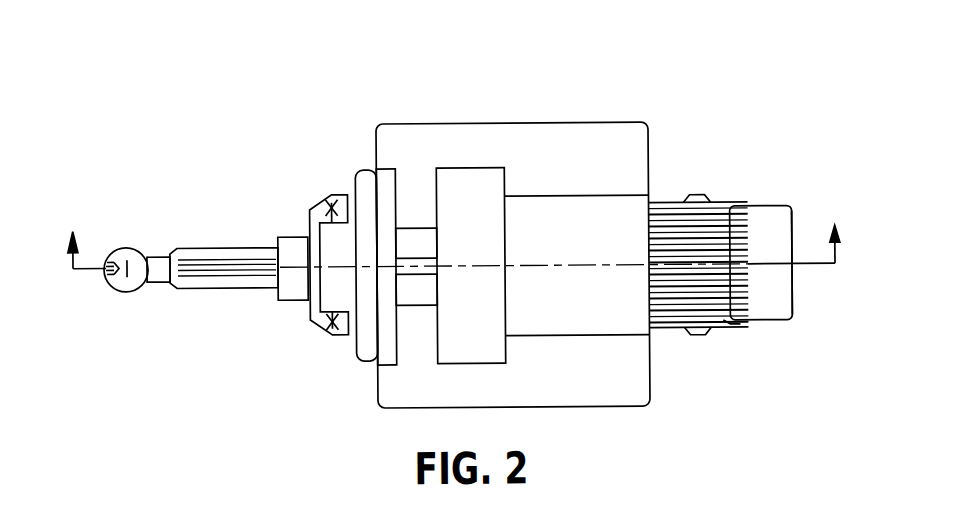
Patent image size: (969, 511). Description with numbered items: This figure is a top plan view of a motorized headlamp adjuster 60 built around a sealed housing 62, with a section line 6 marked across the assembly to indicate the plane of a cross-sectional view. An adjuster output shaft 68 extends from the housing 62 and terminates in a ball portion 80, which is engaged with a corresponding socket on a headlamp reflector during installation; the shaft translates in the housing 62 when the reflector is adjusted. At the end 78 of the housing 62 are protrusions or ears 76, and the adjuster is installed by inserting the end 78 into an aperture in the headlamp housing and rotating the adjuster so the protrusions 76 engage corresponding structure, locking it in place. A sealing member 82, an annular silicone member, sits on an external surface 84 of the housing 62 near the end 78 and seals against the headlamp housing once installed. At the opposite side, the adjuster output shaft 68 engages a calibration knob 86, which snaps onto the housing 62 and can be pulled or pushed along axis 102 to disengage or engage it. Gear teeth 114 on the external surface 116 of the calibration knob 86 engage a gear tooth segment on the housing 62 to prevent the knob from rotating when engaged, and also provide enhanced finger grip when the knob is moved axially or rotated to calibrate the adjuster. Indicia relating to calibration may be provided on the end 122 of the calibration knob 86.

The section line 6- 6 is at (454, 247).
The motorized headlamp adjuster 60 is at (653, 83).
The housing 62 is at (459, 112).
The adjuster output shaft 68 is at (228, 238).
The protrusions or ears 76 is at (324, 199).
The end of the housing 78 is at (309, 311).
The ball portion 80 is at (113, 302).
The sealing member 82 is at (370, 182).
The external surface of the housing 84 is at (352, 199).
The calibration knob 86 is at (745, 194).
The axis 102 is at (805, 264).
The gear teeth 114 is at (719, 327).
The external surface of the calibration knob 116 is at (745, 324).
The end of the calibration knob 122 is at (792, 292).